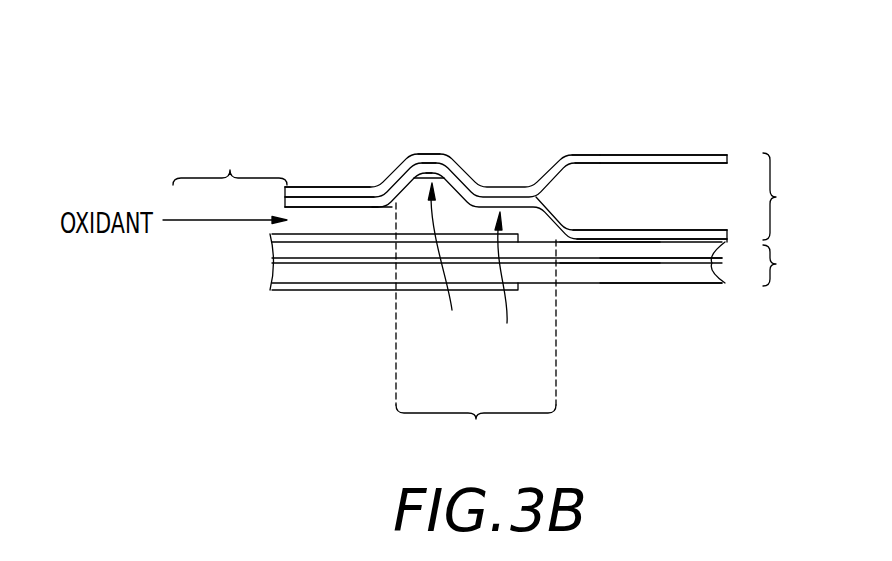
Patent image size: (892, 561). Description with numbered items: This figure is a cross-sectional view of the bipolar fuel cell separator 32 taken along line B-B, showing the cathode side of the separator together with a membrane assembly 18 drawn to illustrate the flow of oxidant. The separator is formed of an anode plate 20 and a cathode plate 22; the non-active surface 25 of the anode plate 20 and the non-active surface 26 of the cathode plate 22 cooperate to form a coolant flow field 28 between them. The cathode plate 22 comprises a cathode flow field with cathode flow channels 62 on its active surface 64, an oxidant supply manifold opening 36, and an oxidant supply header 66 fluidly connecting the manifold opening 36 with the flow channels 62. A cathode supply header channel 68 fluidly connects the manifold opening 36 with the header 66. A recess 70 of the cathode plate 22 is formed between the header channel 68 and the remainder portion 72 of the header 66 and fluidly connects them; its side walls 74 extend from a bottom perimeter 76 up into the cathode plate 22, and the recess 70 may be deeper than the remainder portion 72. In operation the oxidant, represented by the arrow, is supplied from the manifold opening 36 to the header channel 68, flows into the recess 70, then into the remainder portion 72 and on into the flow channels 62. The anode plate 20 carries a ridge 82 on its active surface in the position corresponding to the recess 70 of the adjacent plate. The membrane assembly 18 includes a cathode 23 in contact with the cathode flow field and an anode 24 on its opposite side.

The membrane assembly 18 is at (541, 264).
The anode plate 20 is at (347, 195).
The cathode plate 22 is at (310, 200).
The cathode 23 is at (660, 252).
The anode 24 is at (652, 273).
The non-active surface of anode plate 25 is at (553, 178).
The non-active surface of cathode plate 26 is at (553, 212).
The coolant flow field 28 is at (683, 187).
The bipolar fuel cell separator 32 is at (787, 196).
The oxidant supply manifold opening 36 is at (230, 159).
The cathode flow channels 62 is at (604, 240).
The active surface 64 is at (638, 244).
The oxidant supply header 66 is at (476, 331).
The cathode supply header channel 68 is at (308, 228).
The recess 70 is at (444, 266).
The remainder portion 72 is at (501, 287).
The side walls 74 is at (408, 178).
The bottom perimeter 76 is at (390, 203).
The ridge 82 is at (430, 163).